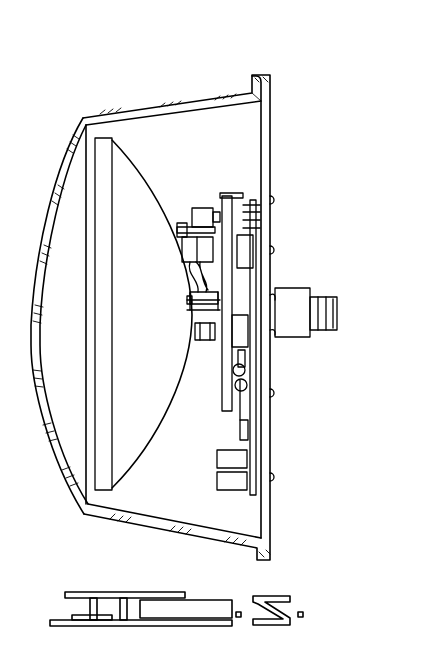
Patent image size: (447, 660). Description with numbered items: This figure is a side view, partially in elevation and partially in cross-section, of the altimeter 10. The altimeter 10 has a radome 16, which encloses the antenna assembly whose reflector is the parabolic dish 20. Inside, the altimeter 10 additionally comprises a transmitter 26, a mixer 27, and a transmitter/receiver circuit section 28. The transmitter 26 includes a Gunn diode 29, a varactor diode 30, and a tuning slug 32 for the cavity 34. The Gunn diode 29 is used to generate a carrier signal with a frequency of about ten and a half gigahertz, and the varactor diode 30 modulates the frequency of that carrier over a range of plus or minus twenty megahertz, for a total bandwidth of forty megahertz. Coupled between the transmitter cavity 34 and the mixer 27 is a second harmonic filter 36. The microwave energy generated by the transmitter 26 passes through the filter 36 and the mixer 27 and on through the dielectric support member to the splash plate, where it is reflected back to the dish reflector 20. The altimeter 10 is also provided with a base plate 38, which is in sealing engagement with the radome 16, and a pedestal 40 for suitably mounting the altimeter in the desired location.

The altimeter 10 is at (79, 112).
The radome 16 is at (127, 113).
The parabolic dish 20 is at (137, 163).
The transmitter 26 is at (183, 180).
The mixer 27 is at (197, 302).
The transmitter/receiver circuit section 28 is at (225, 412).
The Gunn diode 29 is at (182, 250).
The varactor diode 30 is at (192, 276).
The tuning slug 32 is at (202, 208).
The cavity 34 is at (177, 230).
The second harmonic filter 36 is at (244, 272).
The base plate 38 is at (282, 443).
The pedestal 40 is at (307, 338).